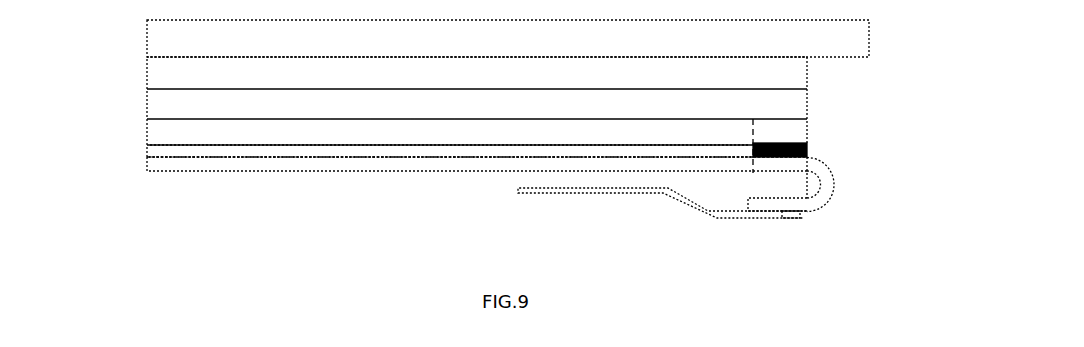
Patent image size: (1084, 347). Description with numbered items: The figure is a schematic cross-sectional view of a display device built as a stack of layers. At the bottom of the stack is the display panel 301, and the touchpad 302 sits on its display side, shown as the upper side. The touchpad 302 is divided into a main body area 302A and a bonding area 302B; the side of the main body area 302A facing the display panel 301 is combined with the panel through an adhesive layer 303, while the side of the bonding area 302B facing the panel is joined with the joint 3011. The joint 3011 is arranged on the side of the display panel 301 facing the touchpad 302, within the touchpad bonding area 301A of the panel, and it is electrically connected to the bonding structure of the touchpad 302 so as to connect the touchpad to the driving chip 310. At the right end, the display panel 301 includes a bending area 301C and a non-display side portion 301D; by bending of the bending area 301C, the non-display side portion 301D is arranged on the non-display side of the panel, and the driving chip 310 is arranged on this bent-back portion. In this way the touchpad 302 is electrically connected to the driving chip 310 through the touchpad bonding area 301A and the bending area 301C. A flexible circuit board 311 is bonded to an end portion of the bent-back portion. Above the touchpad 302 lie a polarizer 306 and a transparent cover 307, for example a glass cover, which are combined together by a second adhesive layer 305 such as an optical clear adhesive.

The transparent cover 307 is at (153, 42).
The second adhesive layer 305 is at (153, 73).
The polarizer 306 is at (153, 103).
The touchpad 302 is at (153, 130).
The main body area 302A is at (417, 130).
The bonding area 302B is at (787, 131).
The adhesive layer 303 is at (153, 153).
The joint 3011 is at (807, 146).
The display panel 301 is at (153, 164).
The touchpad bonding area 301A is at (797, 163).
The bending area 301C is at (825, 187).
The non-display side portion 301D is at (775, 205).
The driving chip 310 is at (788, 212).
The flexible circuit board 311 is at (553, 190).